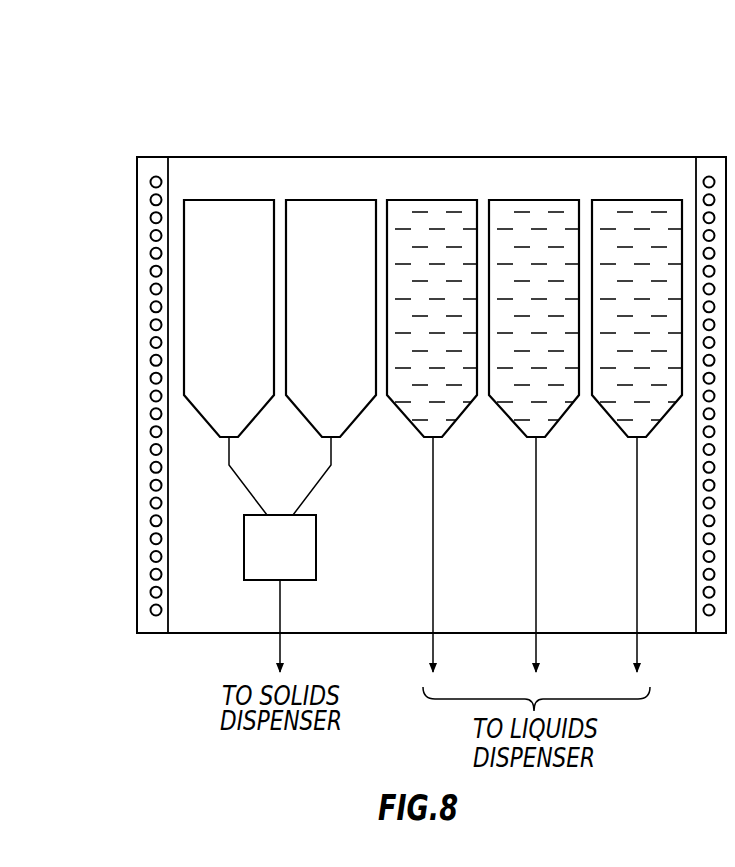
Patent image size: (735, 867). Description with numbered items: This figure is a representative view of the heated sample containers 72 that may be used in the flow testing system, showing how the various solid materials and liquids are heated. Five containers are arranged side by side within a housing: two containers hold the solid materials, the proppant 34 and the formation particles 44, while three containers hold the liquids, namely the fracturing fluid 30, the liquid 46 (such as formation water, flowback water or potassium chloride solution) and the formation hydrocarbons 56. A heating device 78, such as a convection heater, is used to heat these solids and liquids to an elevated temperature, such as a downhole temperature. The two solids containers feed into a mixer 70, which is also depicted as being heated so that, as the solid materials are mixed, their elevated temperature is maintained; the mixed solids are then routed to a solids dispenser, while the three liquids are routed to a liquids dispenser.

The sample containers 72 is at (616, 130).
The heating device 78 is at (151, 178).
The proppant 34 is at (215, 215).
The formation particles 44 is at (318, 215).
The fracturing fluid 30 is at (430, 212).
The liquid 46 is at (527, 212).
The formation hydrocarbons 56 is at (630, 212).
The mixer 70 is at (316, 542).